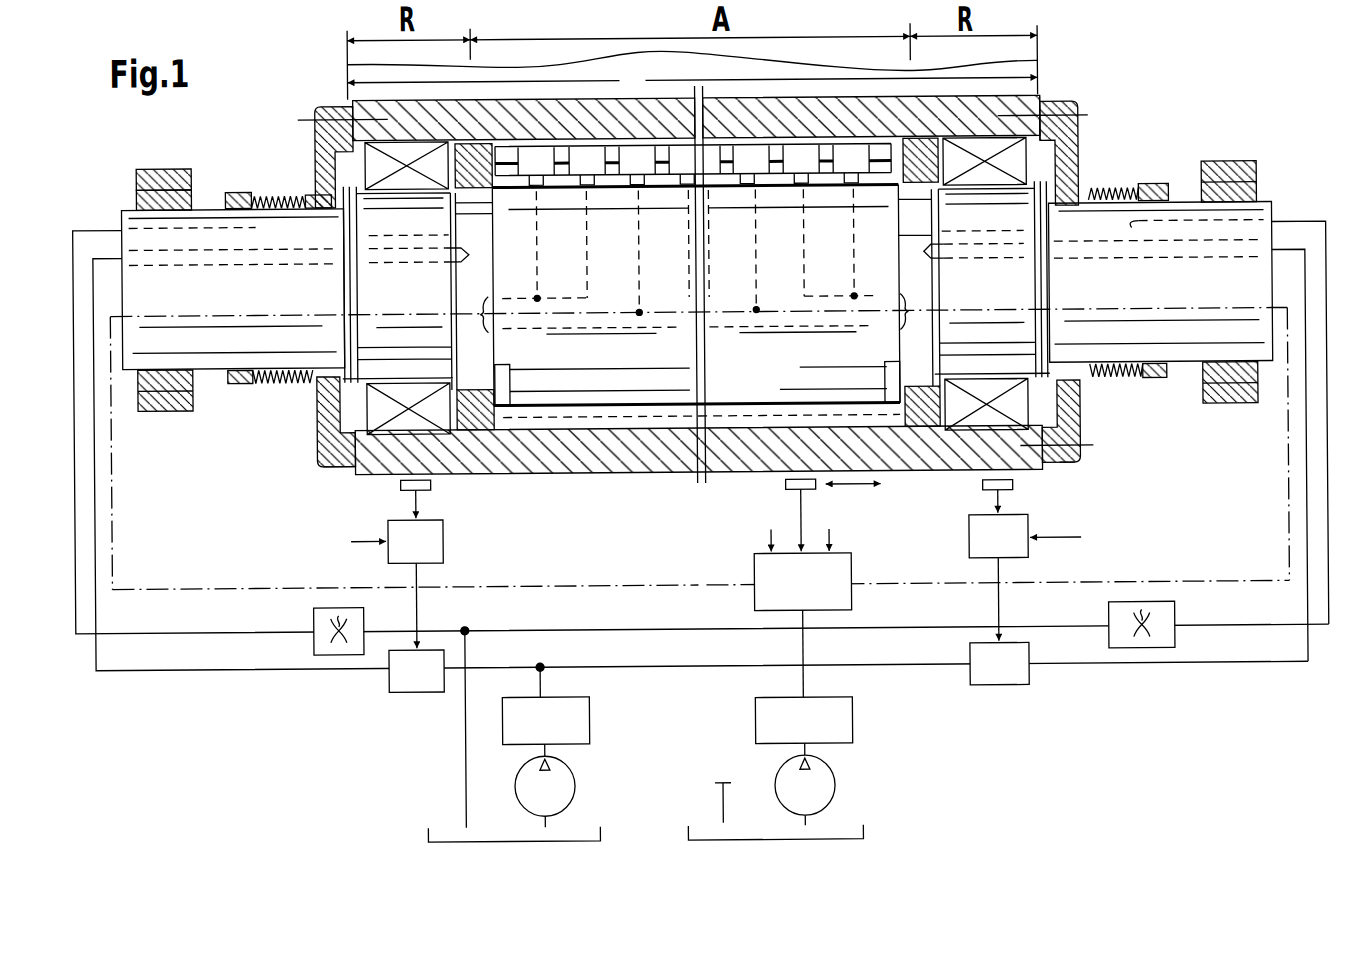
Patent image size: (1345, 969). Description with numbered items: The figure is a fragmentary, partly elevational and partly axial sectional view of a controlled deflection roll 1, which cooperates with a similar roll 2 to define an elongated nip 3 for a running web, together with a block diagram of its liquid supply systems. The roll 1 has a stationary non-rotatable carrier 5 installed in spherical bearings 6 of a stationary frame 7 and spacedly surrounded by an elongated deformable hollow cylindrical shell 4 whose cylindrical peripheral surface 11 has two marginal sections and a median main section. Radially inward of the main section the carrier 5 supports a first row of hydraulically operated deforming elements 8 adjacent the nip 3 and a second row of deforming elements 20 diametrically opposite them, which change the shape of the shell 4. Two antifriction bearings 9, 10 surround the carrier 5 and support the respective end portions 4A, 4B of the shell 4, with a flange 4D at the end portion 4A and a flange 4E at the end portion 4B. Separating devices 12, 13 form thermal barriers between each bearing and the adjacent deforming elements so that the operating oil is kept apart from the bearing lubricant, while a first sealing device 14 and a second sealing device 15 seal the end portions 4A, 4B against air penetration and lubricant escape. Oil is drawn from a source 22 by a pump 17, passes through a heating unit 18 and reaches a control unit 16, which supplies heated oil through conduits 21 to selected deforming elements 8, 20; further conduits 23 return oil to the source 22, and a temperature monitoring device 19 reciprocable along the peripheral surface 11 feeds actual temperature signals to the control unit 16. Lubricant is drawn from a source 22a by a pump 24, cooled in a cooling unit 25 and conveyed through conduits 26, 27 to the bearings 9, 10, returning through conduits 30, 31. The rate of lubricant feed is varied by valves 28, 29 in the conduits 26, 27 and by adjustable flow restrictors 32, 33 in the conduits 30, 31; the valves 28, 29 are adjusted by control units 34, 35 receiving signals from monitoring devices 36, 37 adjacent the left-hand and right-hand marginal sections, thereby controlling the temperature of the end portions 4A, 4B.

The controlled deflection roll 1 is at (1035, 475).
The roll 2 is at (350, 77).
The nip 3 is at (760, 97).
The shell 4 is at (837, 96).
The first end portion of the shell 4A is at (353, 106).
The second end portion of the shell 4B is at (1077, 108).
The flange 4D is at (328, 430).
The flange 4E is at (1075, 411).
The carrier 5 is at (282, 219).
The spherical bearings 6 is at (178, 164).
The stationary frame 7 is at (150, 164).
The deforming elements 8 is at (806, 166).
The antifriction bearing 9 is at (377, 171).
The antifriction bearing 10 is at (1017, 164).
The peripheral surface 11 is at (1044, 99).
The separating device 12 is at (492, 440).
The separating device 13 is at (931, 437).
The first sealing device 14 is at (331, 469).
The second sealing device 15 is at (1084, 464).
The control unit 16 is at (838, 571).
The pump 17 is at (822, 787).
The heating unit 18 is at (843, 721).
The temperature monitoring device 19 is at (783, 487).
The deforming elements 20 is at (594, 419).
The conduits 21 is at (573, 579).
The source of oil 22 is at (862, 829).
The source of lubricant 22a is at (425, 827).
The conduits 23 is at (508, 382).
The pump 24 is at (557, 787).
The cooling unit 25 is at (578, 719).
The conduit 26 is at (227, 667).
The conduit 27 is at (1077, 669).
The regulator 28 is at (408, 675).
The regulator 29 is at (1000, 678).
The conduit 30 is at (155, 631).
The conduit 31 is at (1247, 632).
The regulator 32 is at (328, 653).
The regulator 33 is at (1148, 648).
The control unit 34 is at (432, 532).
The control unit 35 is at (979, 542).
The monitoring device 36 is at (432, 485).
The monitoring device 37 is at (983, 489).